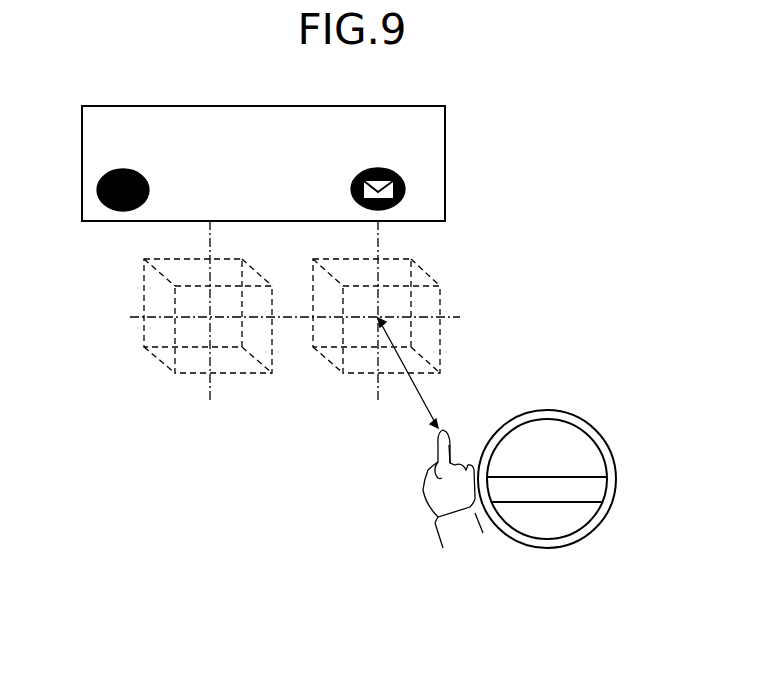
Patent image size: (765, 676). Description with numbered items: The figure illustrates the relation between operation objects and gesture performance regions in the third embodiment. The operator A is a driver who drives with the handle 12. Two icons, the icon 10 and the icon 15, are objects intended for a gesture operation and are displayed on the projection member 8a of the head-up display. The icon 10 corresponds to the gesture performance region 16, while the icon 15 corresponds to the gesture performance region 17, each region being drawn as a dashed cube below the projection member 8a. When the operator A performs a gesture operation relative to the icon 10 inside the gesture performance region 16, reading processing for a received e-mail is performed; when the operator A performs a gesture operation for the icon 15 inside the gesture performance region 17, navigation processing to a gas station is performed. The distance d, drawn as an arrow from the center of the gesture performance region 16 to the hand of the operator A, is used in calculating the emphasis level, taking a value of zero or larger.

The projection member 8a is at (82, 140).
The icon 15 is at (97, 191).
The icon 10 is at (406, 189).
The gesture performance region 17 is at (144, 293).
The gesture performance region 16 is at (440, 296).
The distance d is at (410, 373).
The operator A is at (428, 512).
The handle 12 is at (616, 460).